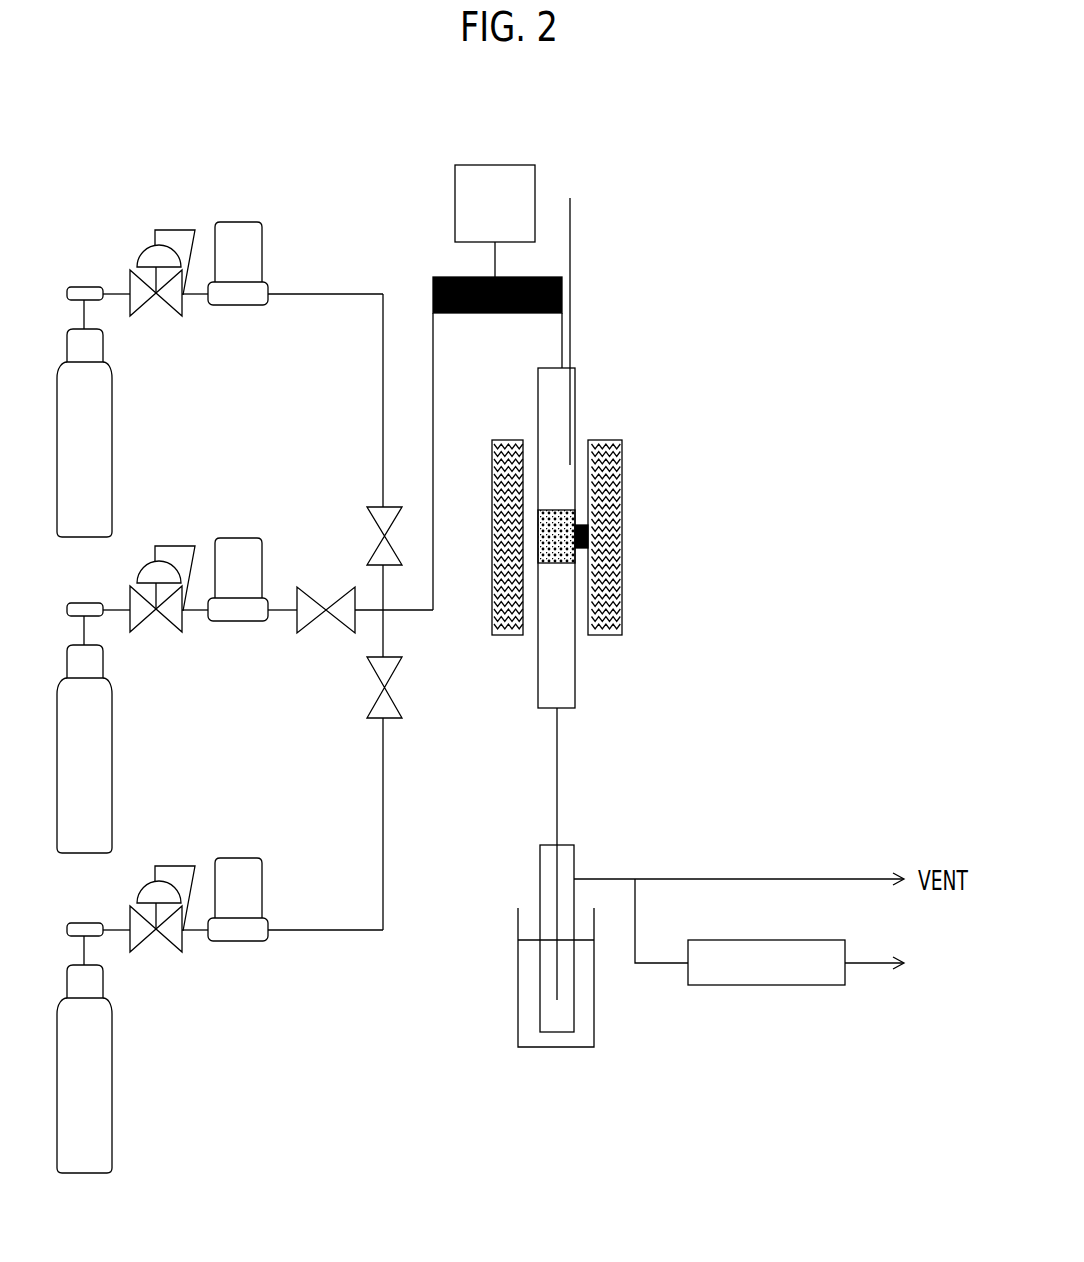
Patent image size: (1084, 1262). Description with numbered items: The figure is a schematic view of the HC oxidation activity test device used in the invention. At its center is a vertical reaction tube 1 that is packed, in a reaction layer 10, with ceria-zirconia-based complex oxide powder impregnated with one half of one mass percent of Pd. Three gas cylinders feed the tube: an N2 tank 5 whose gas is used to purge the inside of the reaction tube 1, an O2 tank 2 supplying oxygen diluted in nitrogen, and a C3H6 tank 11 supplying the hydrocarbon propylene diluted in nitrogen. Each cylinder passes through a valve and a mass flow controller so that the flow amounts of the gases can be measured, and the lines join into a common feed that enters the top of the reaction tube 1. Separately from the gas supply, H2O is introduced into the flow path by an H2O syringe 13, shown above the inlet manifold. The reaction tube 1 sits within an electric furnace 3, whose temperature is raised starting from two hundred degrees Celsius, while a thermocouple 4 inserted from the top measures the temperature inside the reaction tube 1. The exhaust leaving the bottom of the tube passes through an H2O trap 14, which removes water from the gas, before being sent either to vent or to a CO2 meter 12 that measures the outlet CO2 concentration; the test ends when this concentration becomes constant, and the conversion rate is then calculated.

The reaction tube 1 is at (575, 387).
The O2 tank 2 is at (112, 405).
The electric furnace 3 is at (622, 540).
The thermocouple 4 is at (570, 263).
The N2 tank 5 is at (124, 1048).
The reaction layer 10 is at (558, 563).
The C3H6 tank 11 is at (128, 728).
The CO2 meter 12 is at (832, 985).
The H2O syringe 13 is at (492, 165).
The H2O trap 14 is at (558, 1047).